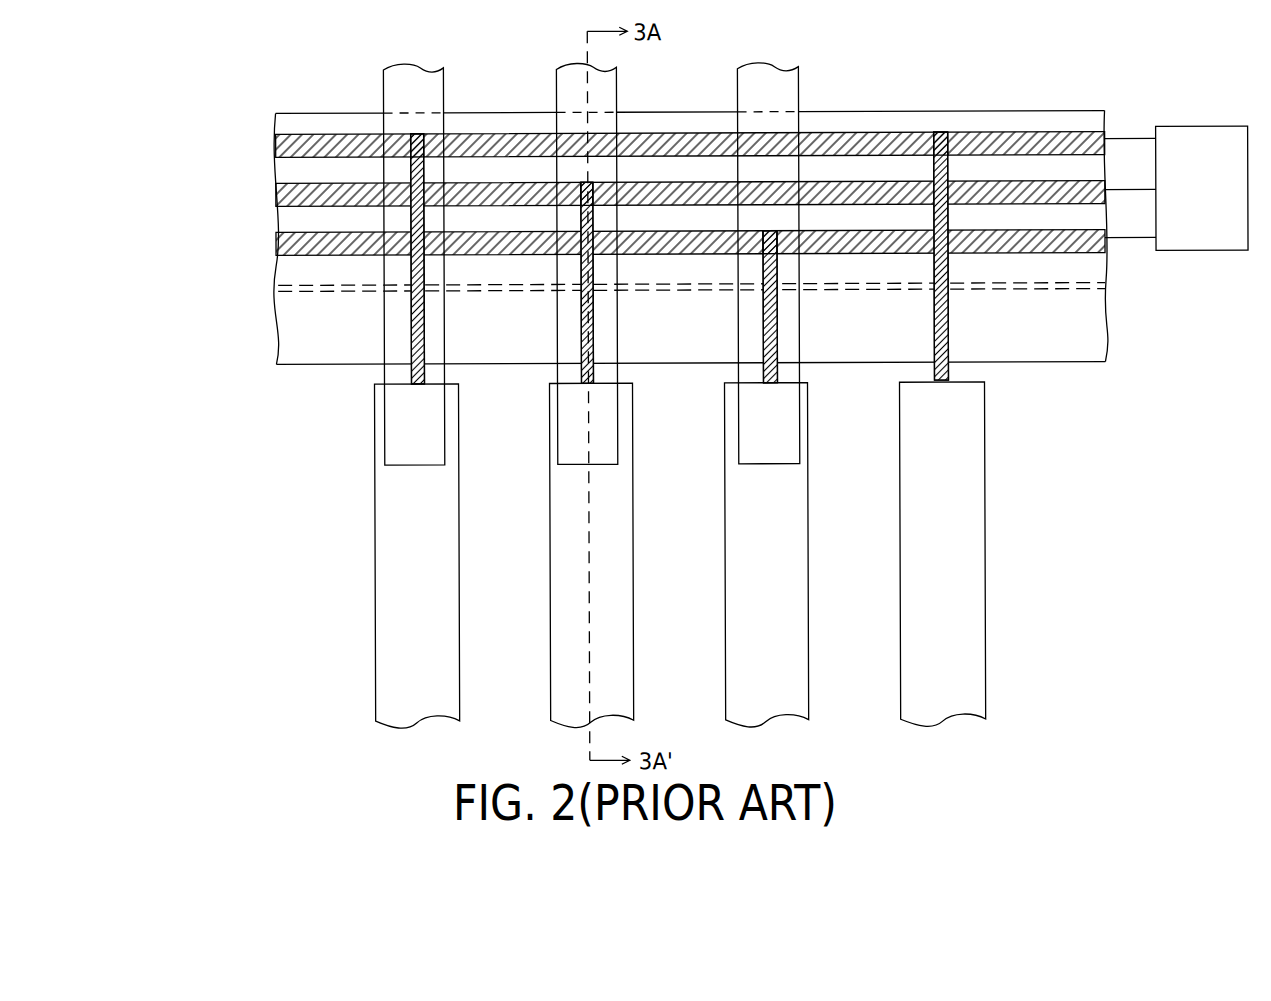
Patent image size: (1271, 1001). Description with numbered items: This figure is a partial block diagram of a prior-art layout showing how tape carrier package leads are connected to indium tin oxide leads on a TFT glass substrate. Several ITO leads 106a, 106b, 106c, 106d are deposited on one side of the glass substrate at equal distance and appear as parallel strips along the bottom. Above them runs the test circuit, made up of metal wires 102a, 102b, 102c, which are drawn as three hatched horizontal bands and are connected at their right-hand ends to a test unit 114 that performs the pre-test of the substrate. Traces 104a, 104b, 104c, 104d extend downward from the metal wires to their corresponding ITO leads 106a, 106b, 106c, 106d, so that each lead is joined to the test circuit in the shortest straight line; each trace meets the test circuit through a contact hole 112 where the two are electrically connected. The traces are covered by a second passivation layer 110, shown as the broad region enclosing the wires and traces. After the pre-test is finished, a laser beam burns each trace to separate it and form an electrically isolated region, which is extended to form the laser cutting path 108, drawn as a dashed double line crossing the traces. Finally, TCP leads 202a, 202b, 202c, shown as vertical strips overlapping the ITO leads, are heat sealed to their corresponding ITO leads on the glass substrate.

The metal wire 102a is at (278, 136).
The metal wire 102b is at (278, 185).
The metal wire 102c is at (278, 233).
The trace 104a is at (412, 375).
The trace 104b is at (582, 375).
The trace 104c is at (764, 372).
The trace 104d is at (935, 372).
The ITO lead 106a is at (386, 660).
The ITO lead 106b is at (565, 658).
The ITO lead 106c is at (736, 660).
The ITO lead 106d is at (924, 665).
The laser cutting path 108 is at (280, 287).
The second passivation layer 110 is at (1044, 110).
The contact hole 112 is at (415, 134).
The test unit 114 is at (1200, 253).
The TCP lead 202a is at (388, 68).
The TCP lead 202b is at (562, 68).
The TCP lead 202c is at (771, 68).